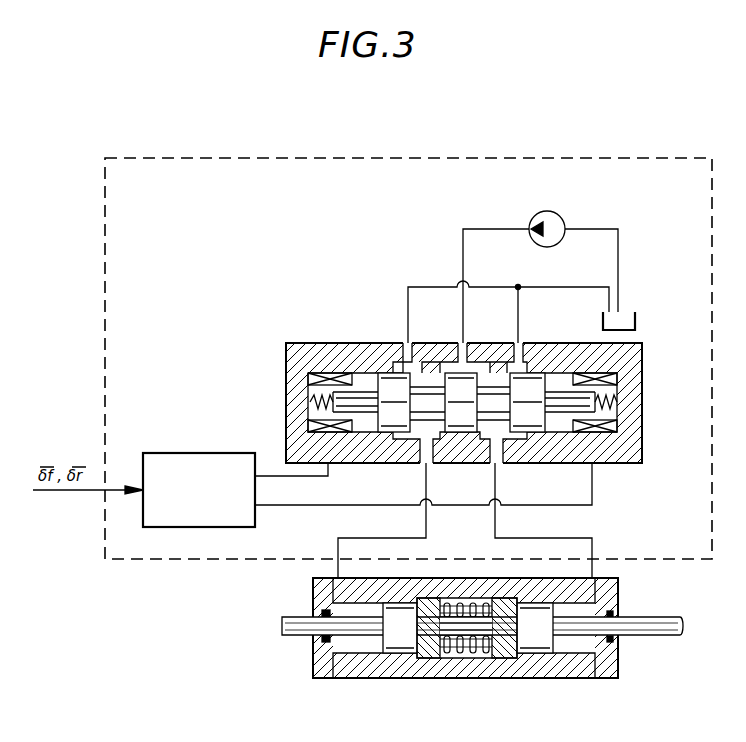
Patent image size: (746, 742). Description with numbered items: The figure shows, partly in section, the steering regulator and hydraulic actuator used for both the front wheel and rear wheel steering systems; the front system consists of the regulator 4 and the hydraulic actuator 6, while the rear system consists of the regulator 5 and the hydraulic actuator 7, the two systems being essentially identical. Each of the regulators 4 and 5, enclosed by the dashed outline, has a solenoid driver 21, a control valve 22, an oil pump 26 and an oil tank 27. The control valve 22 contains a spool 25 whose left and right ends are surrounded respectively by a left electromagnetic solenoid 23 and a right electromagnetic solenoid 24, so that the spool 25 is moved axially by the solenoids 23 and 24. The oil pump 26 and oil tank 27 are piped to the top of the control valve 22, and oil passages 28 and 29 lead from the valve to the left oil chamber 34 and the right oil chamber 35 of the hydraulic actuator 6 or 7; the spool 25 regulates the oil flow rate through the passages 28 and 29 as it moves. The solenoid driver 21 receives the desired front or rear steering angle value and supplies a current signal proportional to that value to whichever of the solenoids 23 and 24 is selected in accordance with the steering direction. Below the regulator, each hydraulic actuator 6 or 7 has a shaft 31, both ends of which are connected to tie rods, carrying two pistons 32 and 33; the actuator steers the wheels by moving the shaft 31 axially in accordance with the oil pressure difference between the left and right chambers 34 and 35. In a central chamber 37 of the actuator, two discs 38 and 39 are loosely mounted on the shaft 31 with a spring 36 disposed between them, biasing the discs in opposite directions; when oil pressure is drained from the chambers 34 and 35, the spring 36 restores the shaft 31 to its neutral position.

The front wheel steering regulator 4 is at (408, 326).
The rear wheel steering regulator 5 is at (648, 157).
The hydraulic actuator 6 is at (455, 629).
The hydraulic actuator 7 is at (455, 629).
The solenoid driver 21 is at (243, 453).
The control valve 22 is at (351, 340).
The left electromagnetic solenoid 23 is at (318, 379).
The right electromagnetic solenoid 24 is at (615, 383).
The spool 25 is at (552, 373).
The oil pump 26 is at (568, 217).
The oil tank 27 is at (637, 324).
The oil passage 28 is at (425, 483).
The oil passage 29 is at (497, 485).
The shaft 31 is at (580, 678).
The piston 32 is at (392, 668).
The piston 33 is at (532, 665).
The left oil chamber 34 is at (343, 665).
The right oil chamber 35 is at (600, 668).
The spring 36 is at (461, 598).
The central chamber 37 is at (465, 668).
The disc 38 is at (428, 668).
The disc 39 is at (505, 668).